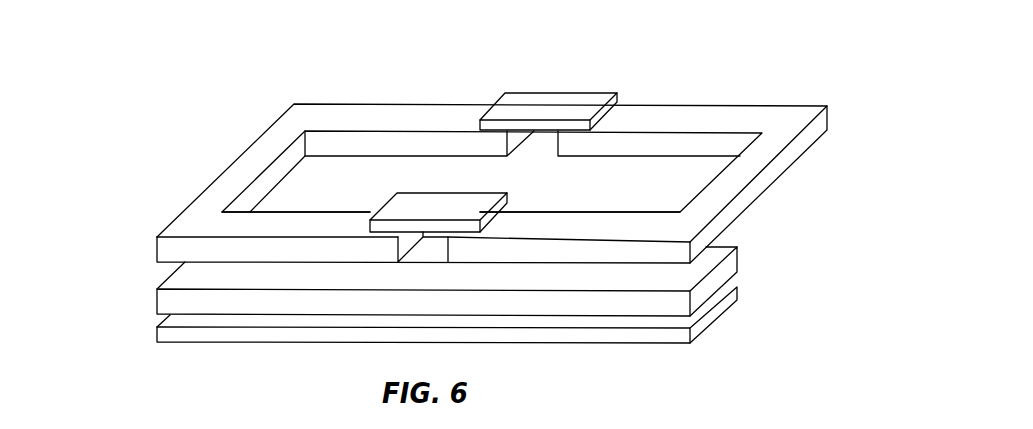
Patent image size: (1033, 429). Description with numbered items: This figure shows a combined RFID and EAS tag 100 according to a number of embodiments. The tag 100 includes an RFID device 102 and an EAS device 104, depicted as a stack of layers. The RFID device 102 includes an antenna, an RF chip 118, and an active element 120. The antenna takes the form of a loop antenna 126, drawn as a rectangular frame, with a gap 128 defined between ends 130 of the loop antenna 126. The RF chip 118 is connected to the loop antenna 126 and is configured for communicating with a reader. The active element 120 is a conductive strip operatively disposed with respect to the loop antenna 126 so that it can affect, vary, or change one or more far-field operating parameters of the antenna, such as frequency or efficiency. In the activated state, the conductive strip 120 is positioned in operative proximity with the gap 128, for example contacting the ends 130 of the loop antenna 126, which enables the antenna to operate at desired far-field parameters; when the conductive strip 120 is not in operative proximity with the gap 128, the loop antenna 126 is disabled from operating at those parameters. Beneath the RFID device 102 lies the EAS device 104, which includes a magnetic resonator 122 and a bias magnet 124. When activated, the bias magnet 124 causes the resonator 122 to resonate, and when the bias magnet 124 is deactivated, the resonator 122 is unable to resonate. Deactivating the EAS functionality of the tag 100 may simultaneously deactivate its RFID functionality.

The combined RFID and EAS tag 100 is at (738, 57).
The RFID device 102 is at (192, 161).
The EAS device 104 is at (142, 316).
The RF chip 118 is at (566, 80).
The active element 120 is at (470, 205).
The magnetic resonator 122 is at (725, 303).
The bias magnet 124 is at (730, 265).
The loop antenna 126 is at (767, 177).
The gap 128 is at (436, 238).
The ends of the antenna 130 is at (365, 218).